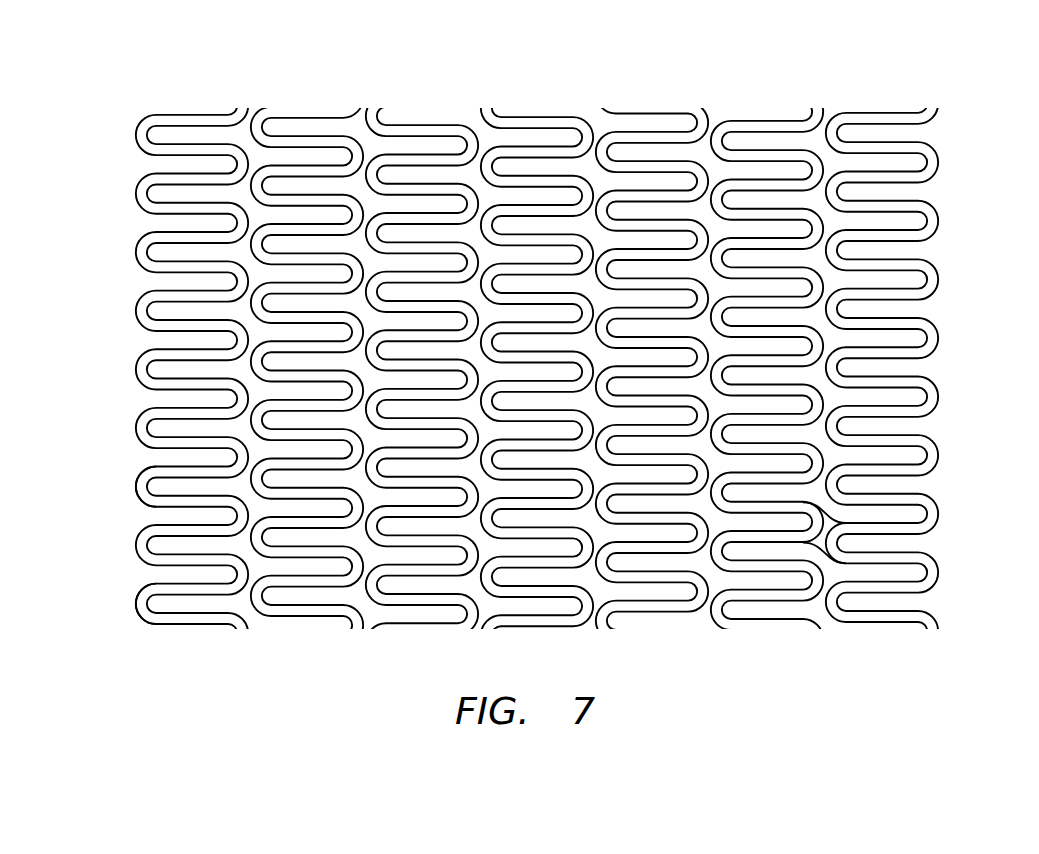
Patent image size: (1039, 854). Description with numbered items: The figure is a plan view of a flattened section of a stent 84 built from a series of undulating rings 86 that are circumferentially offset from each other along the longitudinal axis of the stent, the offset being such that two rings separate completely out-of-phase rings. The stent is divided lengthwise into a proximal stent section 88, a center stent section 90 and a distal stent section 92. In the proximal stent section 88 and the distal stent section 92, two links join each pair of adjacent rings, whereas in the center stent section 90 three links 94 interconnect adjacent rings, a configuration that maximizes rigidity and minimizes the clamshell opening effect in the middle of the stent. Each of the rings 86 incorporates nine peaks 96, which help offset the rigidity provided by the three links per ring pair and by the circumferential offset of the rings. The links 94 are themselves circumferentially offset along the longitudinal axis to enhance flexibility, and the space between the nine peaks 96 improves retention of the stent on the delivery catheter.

The stent 84 is at (538, 350).
The undulating rings 86 is at (136, 591).
The proximal stent section 88 is at (250, 98).
The center stent section 90 is at (825, 54).
The distal stent section 92 is at (940, 95).
The links 94 is at (823, 533).
The peaks 96 is at (136, 477).